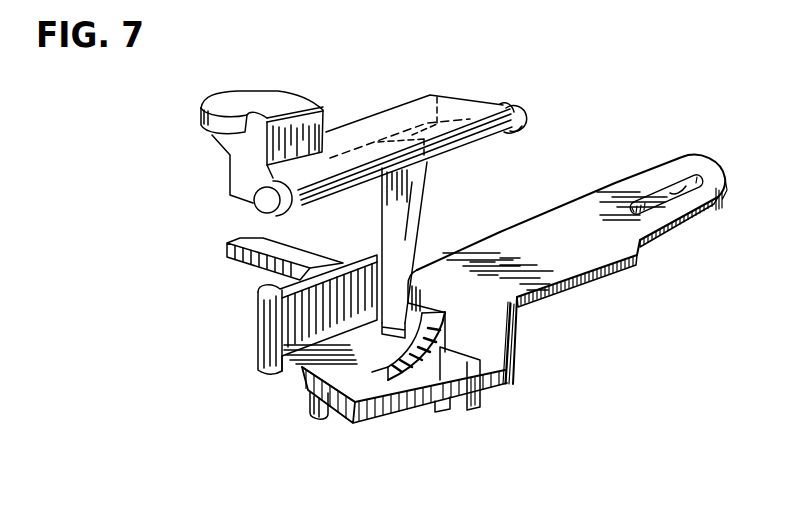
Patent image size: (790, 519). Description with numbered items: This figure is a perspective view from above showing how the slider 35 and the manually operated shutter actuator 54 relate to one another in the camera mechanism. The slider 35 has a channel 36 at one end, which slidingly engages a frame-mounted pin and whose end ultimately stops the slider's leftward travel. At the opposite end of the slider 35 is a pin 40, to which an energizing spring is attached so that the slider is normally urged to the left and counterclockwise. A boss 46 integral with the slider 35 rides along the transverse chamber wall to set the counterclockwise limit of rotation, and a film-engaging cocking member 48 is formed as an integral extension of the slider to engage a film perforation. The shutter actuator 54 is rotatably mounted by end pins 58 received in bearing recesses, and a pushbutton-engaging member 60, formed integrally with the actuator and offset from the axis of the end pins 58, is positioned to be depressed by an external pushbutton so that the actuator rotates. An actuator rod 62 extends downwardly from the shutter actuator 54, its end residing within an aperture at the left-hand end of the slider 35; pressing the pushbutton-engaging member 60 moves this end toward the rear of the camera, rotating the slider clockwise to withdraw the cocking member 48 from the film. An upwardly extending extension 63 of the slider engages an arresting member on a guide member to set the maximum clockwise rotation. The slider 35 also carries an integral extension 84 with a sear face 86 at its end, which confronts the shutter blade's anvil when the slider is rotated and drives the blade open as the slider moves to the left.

The slider 35 is at (528, 342).
The channel 36 is at (688, 176).
The pin 40 is at (316, 418).
The boss 46 is at (257, 332).
The film-engaging cocking member 48 is at (248, 266).
The shutter actuator 54 is at (390, 93).
The end pins 58 is at (270, 200).
The pushbutton-engaging member 60 is at (264, 97).
The actuator rod 62 is at (418, 198).
The upwardly extending extension 63 is at (425, 313).
The integral extension 84 is at (413, 410).
The sear face 86 is at (347, 408).